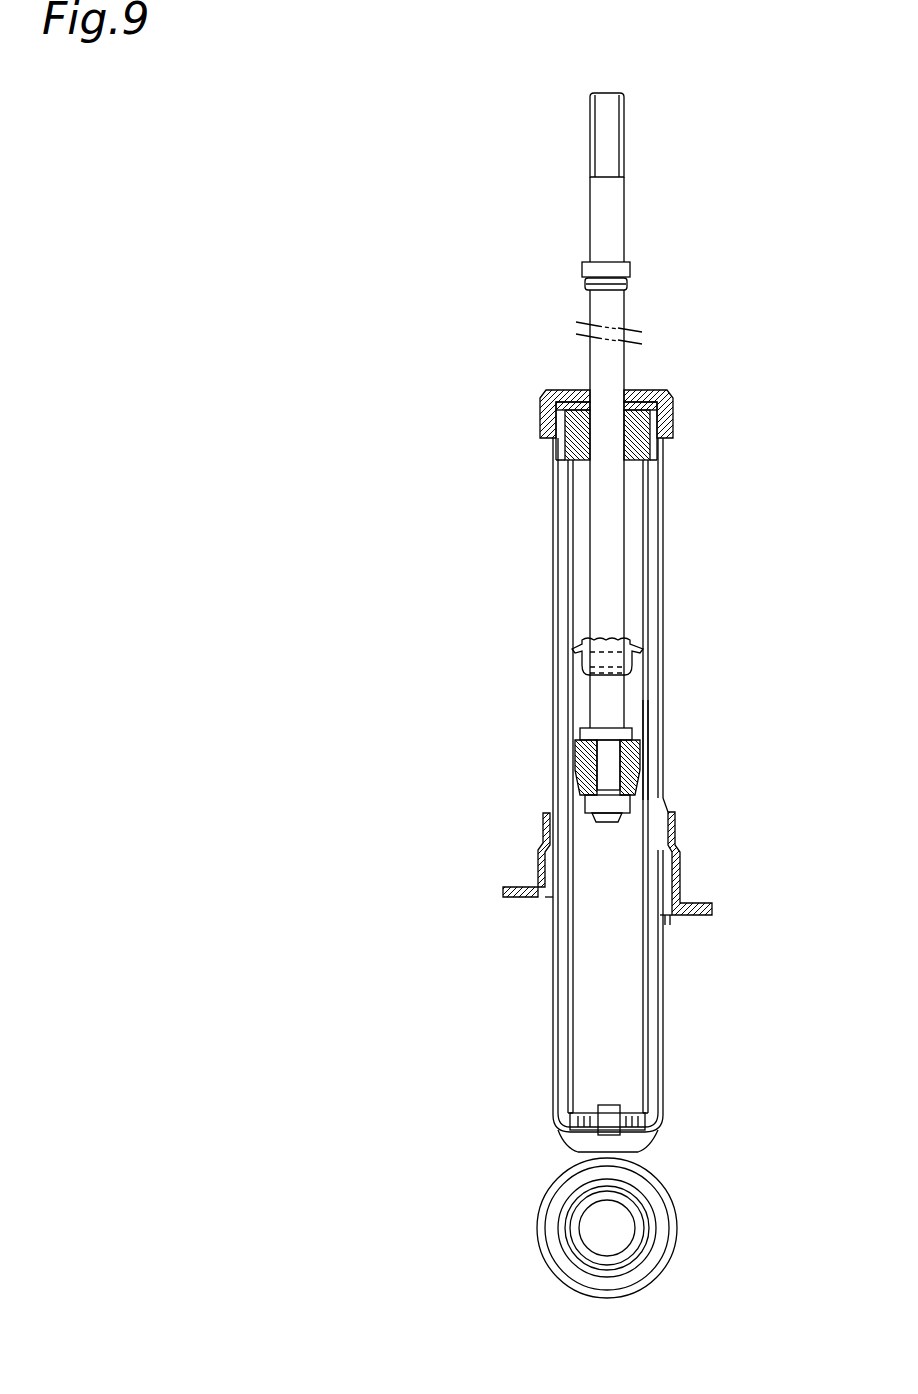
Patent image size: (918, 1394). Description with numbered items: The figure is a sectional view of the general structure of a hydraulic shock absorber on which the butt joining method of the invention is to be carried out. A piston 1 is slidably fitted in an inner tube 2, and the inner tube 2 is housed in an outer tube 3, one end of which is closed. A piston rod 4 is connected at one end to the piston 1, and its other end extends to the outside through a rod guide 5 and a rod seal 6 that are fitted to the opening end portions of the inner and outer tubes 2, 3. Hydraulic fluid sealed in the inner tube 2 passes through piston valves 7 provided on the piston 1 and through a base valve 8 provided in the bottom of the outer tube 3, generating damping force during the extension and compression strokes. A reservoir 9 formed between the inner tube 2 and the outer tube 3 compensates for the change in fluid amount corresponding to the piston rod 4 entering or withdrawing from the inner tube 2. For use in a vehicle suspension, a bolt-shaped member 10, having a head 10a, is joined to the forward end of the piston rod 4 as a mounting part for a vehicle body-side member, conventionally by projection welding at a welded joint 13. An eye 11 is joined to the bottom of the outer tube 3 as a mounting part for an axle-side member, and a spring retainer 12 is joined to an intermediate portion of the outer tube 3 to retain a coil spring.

The piston 1 is at (648, 763).
The inner tube 2 is at (648, 573).
The outer tube 3 is at (552, 982).
The piston rod 4 is at (597, 603).
The rod guide 5 is at (665, 428).
The rod seal 6 is at (572, 390).
The piston valves 7 is at (575, 787).
The base valve 8 is at (640, 1108).
The reservoir 9 is at (560, 502).
The bolt-shaped member 10 is at (590, 133).
The head 10a is at (628, 270).
The eye 11 is at (552, 1195).
The spring retainer 12 is at (700, 905).
The welded joint 13 is at (590, 280).